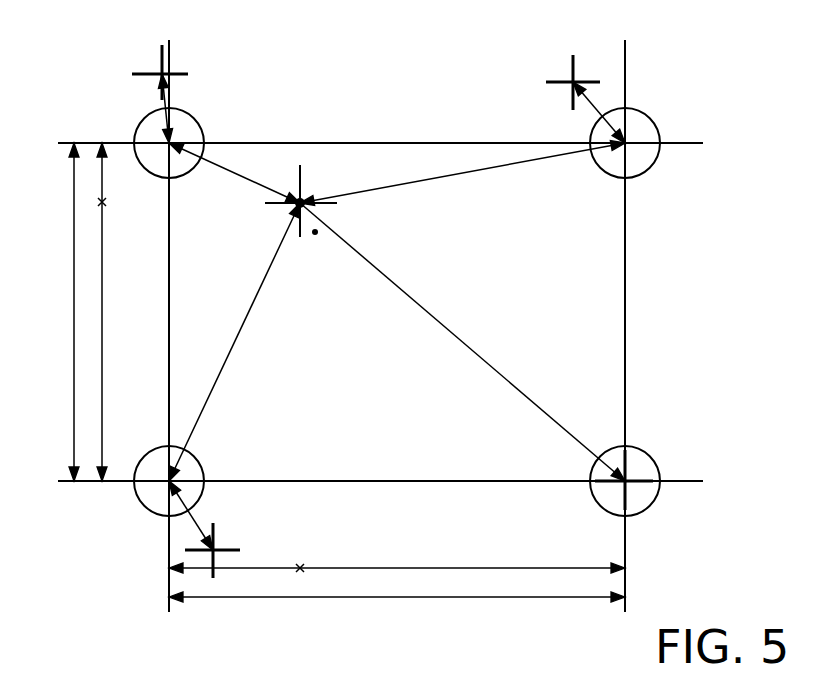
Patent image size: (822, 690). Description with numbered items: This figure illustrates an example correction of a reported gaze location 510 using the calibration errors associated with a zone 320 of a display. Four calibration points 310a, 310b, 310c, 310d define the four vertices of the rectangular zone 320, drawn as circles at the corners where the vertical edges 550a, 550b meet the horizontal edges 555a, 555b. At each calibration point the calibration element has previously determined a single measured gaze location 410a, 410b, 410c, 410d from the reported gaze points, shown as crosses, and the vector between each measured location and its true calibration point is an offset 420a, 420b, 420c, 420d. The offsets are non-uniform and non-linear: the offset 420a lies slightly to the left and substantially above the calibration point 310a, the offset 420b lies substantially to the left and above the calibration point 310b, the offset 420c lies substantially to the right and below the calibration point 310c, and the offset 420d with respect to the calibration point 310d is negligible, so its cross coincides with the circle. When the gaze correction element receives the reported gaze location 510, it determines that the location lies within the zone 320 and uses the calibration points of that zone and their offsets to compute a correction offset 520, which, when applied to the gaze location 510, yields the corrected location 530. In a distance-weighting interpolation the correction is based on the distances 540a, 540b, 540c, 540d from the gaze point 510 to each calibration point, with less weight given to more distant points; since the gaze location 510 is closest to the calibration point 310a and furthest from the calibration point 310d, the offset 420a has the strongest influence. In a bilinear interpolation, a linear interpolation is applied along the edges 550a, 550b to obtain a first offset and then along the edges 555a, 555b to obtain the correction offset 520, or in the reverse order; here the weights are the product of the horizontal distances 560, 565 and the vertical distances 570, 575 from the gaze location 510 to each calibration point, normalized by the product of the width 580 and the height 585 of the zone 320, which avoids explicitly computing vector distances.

The calibration point 310a is at (175, 145).
The calibration point 310b is at (635, 137).
The calibration point 310c is at (178, 478).
The calibration point 310d is at (635, 477).
The zone 320 is at (612, 305).
The measured gaze location 410a is at (165, 68).
The measured gaze location 410b is at (573, 78).
The measured gaze location 410c is at (225, 547).
The measured gaze location 410d is at (652, 505).
The offset 420a is at (167, 120).
The offset 420b is at (585, 120).
The offset 420c is at (195, 522).
The offset 420d is at (602, 505).
The reported gaze location 510 is at (307, 195).
The correction offset 520 is at (317, 212).
The corrected gaze location 530 is at (315, 232).
The distance 540a is at (242, 177).
The distance 540b is at (450, 177).
The distance 540c is at (245, 322).
The distance 540d is at (435, 323).
The edge 550a is at (173, 242).
The edge 550b is at (625, 248).
The edge 555a is at (370, 143).
The edge 555b is at (370, 481).
The horizontal distance 560 is at (260, 568).
The horizontal distance 565 is at (470, 568).
The vertical distance 570 is at (102, 365).
The vertical distance 575 is at (102, 178).
The width 580 is at (368, 597).
The height 585 is at (74, 278).